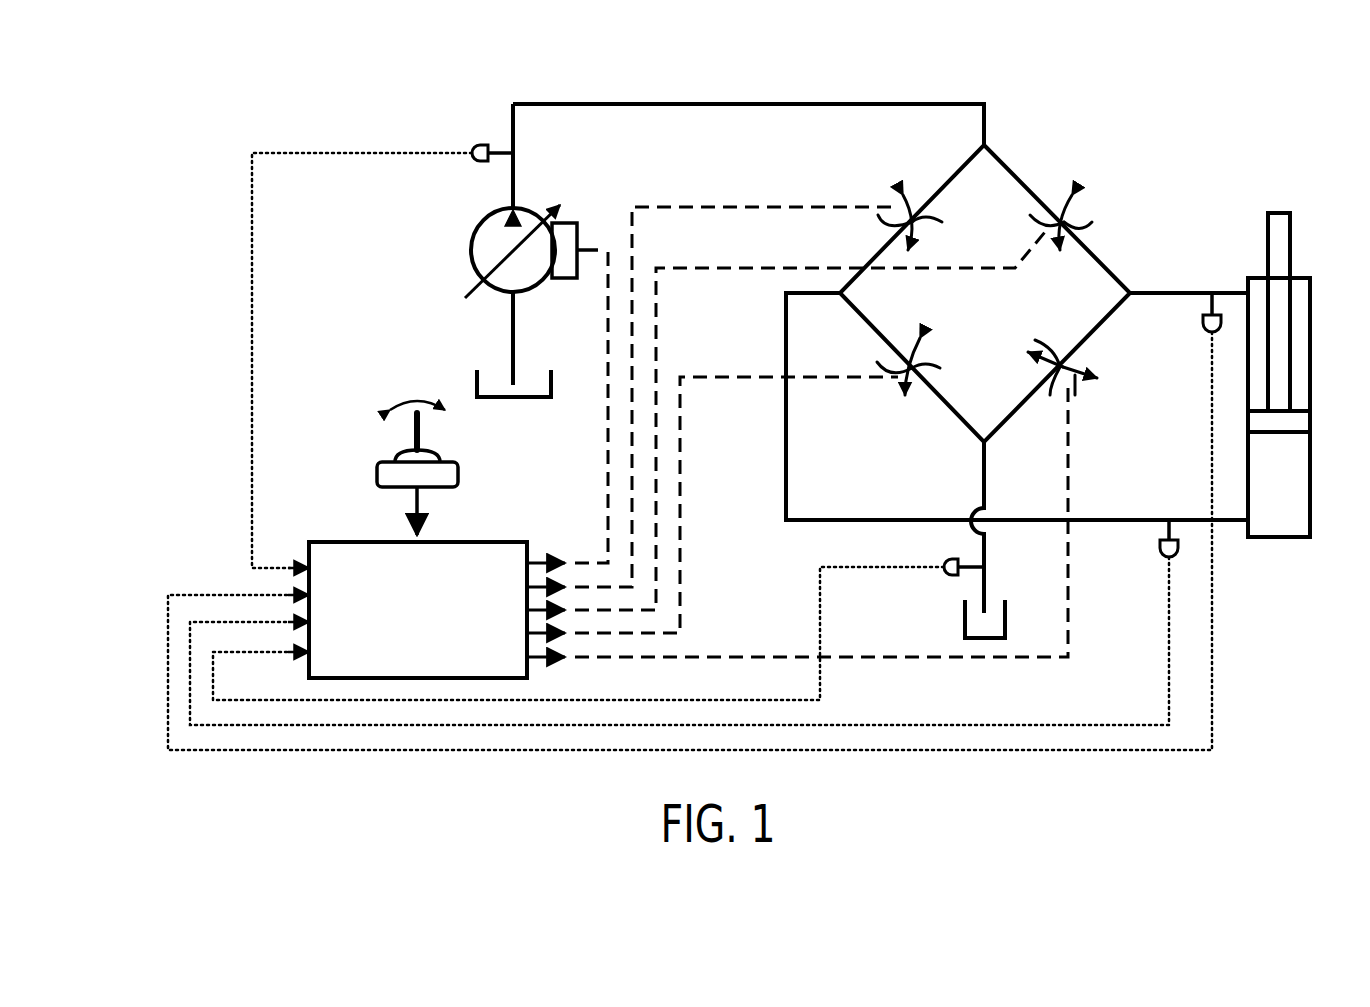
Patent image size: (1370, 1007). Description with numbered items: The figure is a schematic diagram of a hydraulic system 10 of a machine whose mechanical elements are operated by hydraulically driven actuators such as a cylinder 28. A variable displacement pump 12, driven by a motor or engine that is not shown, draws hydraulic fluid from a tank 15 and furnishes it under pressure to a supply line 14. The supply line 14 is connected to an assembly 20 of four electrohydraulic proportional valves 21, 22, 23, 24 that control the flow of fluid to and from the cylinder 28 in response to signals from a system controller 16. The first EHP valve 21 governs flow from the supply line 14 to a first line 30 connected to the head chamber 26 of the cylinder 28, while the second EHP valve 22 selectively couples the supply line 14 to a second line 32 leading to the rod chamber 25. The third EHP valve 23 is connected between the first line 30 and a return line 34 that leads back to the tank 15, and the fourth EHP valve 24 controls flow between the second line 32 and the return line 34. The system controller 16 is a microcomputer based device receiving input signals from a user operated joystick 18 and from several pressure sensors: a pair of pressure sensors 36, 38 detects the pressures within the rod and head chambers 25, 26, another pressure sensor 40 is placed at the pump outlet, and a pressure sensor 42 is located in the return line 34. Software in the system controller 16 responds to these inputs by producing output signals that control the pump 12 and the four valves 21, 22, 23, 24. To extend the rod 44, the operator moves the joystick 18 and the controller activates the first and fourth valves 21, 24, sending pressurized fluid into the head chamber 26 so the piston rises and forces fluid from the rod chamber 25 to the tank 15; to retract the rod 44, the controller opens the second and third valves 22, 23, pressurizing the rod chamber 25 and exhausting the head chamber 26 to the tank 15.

The hydraulic system 10 is at (1186, 158).
The variable displacement pump 12 is at (474, 230).
The supply line 14 is at (711, 105).
The tank 15 is at (525, 397).
The system controller 16 is at (487, 542).
The joystick 18 is at (460, 475).
The assembly of four electrohydraulic proportional valves 20 is at (1024, 162).
The first EHP valve 21 is at (893, 214).
The second EHP valve 22 is at (1076, 222).
The third EHP valve 23 is at (925, 365).
The fourth EHP valve 24 is at (1060, 358).
The rod chamber 25 is at (1258, 283).
The head chamber 26 is at (1275, 537).
The cylinder 28 is at (1240, 472).
The first line 30 is at (786, 400).
The second line 32 is at (1192, 290).
The return line 34 is at (982, 458).
The pressure sensor 36 is at (1205, 324).
The pressure sensor 38 is at (1162, 556).
The pressure sensor 40 is at (481, 143).
The pressure sensor 42 is at (949, 577).
The rod 44 is at (1286, 226).